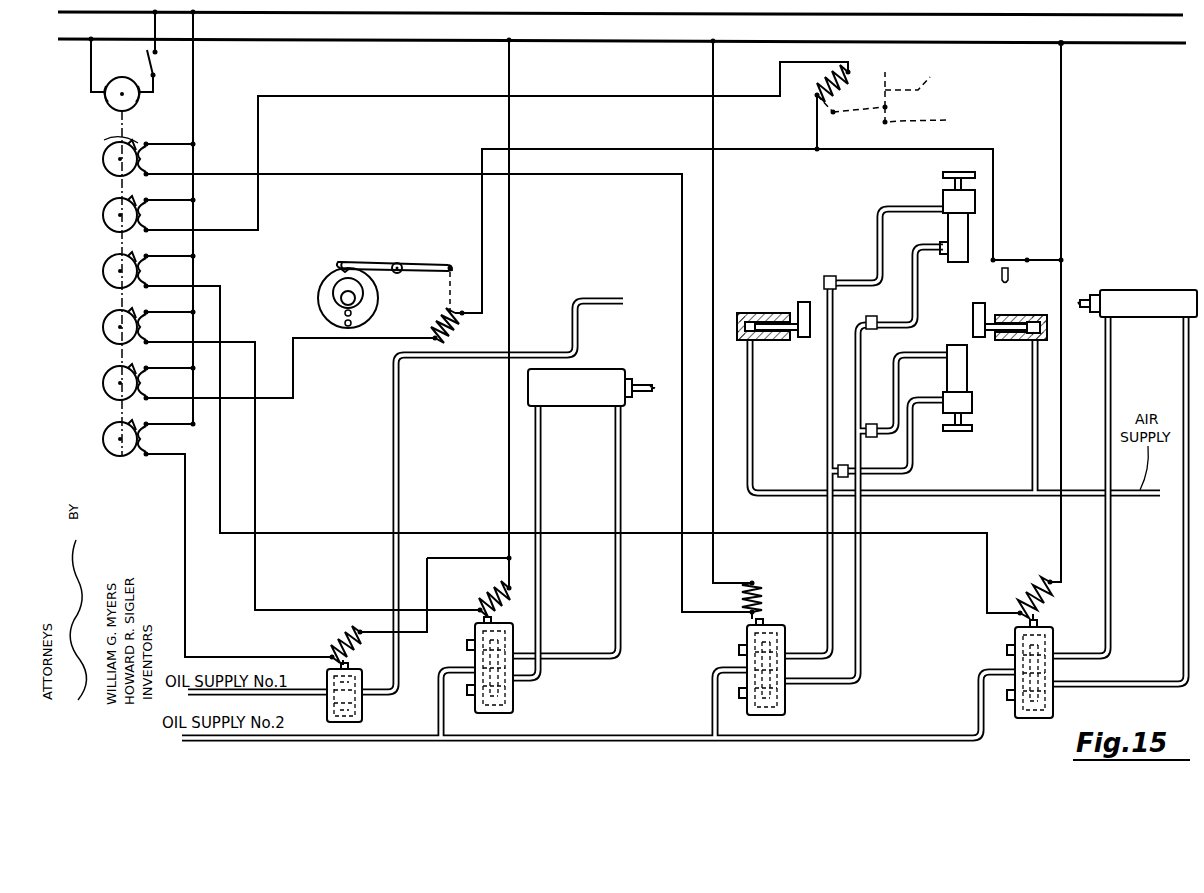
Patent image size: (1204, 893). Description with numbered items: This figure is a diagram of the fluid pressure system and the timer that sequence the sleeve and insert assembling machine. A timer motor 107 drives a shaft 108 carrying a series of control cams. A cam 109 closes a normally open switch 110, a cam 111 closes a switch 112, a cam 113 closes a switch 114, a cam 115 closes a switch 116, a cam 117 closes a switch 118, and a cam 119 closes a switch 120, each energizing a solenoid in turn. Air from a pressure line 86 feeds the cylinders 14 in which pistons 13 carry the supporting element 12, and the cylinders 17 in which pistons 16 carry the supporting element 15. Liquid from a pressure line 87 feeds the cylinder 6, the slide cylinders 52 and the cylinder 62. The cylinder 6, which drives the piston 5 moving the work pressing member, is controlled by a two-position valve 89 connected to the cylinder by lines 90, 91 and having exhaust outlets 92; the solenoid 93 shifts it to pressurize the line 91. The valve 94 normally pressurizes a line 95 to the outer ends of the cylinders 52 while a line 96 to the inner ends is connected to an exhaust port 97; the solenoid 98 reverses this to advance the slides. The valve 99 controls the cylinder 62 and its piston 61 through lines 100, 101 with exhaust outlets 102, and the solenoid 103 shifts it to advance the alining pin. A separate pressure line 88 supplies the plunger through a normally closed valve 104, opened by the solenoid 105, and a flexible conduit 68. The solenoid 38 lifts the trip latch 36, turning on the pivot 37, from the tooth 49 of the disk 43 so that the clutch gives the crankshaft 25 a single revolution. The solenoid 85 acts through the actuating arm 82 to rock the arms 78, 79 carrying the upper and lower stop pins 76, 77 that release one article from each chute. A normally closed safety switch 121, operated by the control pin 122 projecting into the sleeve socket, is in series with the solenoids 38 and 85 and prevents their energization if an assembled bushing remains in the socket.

The piston 5 is at (644, 384).
The fluid pressure cylinder 6 is at (600, 368).
The supporting element 12 is at (968, 310).
The pistons 13 is at (990, 310).
The cylinders 14 is at (1006, 341).
The supporting element 15 is at (805, 300).
The pistons 16 is at (794, 334).
The cylinders 17 is at (750, 312).
The crankshaft 25 is at (343, 290).
The trip latch 36 is at (384, 260).
The pivot 37 is at (400, 274).
The solenoid 38 is at (458, 328).
The disk 43 is at (318, 298).
The tooth 49 is at (350, 261).
The cylinders 52 is at (944, 232).
The piston 61 is at (1082, 298).
The cylinder 62 is at (1158, 288).
The flexible conduit 68 is at (392, 470).
The upper stop pins 76 is at (921, 75).
The lower stop pins 77 is at (936, 126).
The upwardly extending arms 78 is at (880, 81).
The downwardly extending arms 79 is at (885, 127).
The actuating arm 82 is at (836, 116).
The solenoid 85 is at (824, 97).
The pressure line 86 is at (1006, 491).
The pressure line 87 is at (418, 741).
The pressure line 88 is at (256, 696).
The valve 89 is at (515, 702).
The line 90 is at (622, 486).
The line 91 is at (542, 486).
The exhaust outlets 92 is at (470, 640).
The solenoid 93 is at (488, 590).
The valve 94 is at (788, 634).
The line 95 is at (826, 554).
The line 96 is at (864, 562).
The exhaust port 97 is at (740, 646).
The solenoid 98 is at (758, 580).
The valve 99 is at (1056, 640).
The line 100 is at (1112, 592).
The line 101 is at (1180, 640).
The exhaust outlets 102 is at (1008, 646).
The solenoid 103 is at (1028, 578).
The valve 104 is at (364, 709).
The solenoid 105 is at (330, 640).
The timer motor 107 is at (122, 77).
The driving shaft 108 is at (118, 121).
The cam 109 is at (103, 168).
The switch 110 is at (148, 148).
The cam 111 is at (103, 222).
The switch 112 is at (148, 204).
The cam 113 is at (103, 278).
The switch 114 is at (148, 260).
The cam 115 is at (103, 334).
The switch 116 is at (148, 316).
The cam 117 is at (103, 390).
The switch 118 is at (148, 372).
The cam 119 is at (103, 446).
The switch 120 is at (148, 428).
The safety switch 121 is at (1016, 258).
The control pin 122 is at (1010, 272).